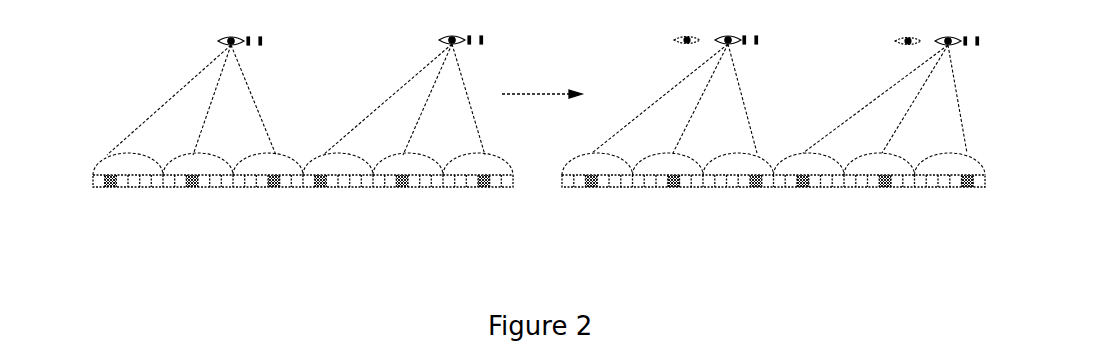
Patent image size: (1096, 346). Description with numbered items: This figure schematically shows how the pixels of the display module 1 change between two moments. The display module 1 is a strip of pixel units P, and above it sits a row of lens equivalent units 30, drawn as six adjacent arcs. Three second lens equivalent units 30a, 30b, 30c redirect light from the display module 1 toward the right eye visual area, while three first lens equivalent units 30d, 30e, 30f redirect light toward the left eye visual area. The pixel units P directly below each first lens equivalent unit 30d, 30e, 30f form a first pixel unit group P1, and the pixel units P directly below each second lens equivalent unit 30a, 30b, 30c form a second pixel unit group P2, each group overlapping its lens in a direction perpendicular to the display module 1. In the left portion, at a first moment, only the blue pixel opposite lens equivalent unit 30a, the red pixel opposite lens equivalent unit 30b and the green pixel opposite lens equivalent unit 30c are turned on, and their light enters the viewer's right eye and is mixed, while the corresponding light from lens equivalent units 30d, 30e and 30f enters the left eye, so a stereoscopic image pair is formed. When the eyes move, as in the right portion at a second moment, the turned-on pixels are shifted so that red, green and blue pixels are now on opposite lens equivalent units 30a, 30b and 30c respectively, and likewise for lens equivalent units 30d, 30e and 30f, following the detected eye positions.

The display module 1 is at (250, 187).
The lens equivalent units 30 is at (304, 155).
The second lens equivalent unit 30a is at (363, 164).
The second lens equivalent unit 30b is at (433, 164).
The second lens equivalent unit 30c is at (503, 164).
The first lens equivalent unit 30d is at (573, 164).
The first lens equivalent unit 30e is at (644, 164).
The first lens equivalent unit 30f is at (714, 164).
The pixel unit P is at (98, 181).
The first pixel unit group P1 is at (512, 195).
The second pixel unit group P2 is at (157, 202).